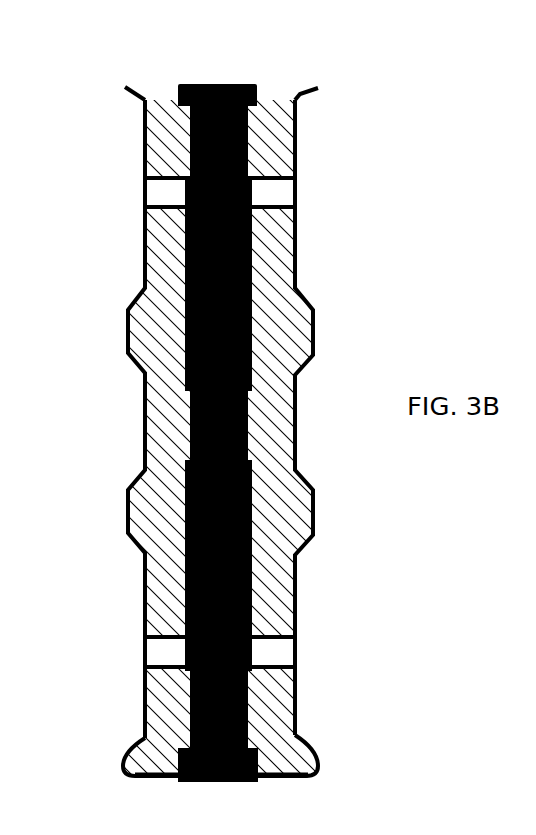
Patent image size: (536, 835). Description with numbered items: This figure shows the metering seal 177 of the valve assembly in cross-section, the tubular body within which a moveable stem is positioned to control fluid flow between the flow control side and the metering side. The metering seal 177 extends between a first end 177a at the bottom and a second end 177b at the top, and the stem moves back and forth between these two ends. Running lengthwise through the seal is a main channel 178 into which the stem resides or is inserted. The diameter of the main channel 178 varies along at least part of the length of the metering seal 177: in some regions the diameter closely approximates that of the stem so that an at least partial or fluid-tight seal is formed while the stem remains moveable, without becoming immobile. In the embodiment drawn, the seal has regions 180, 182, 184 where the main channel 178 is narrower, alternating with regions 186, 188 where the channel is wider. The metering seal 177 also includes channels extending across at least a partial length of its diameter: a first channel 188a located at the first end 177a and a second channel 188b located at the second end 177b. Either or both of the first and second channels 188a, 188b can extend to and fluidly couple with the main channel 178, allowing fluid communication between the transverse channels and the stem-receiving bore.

The metering seal 177 is at (293, 138).
The first end of the metering seal 177a is at (300, 733).
The second end of the metering seal 177b is at (303, 93).
The main channel 178 is at (251, 99).
The narrower region of the main channel 180 is at (190, 132).
The narrower region of the main channel 182 is at (192, 422).
The narrower region of the main channel 184 is at (183, 710).
The wider region of the main channel 186 is at (185, 270).
The wider region of the main channel 188 is at (185, 563).
The first channel 188a is at (280, 651).
The second channel 188b is at (287, 187).